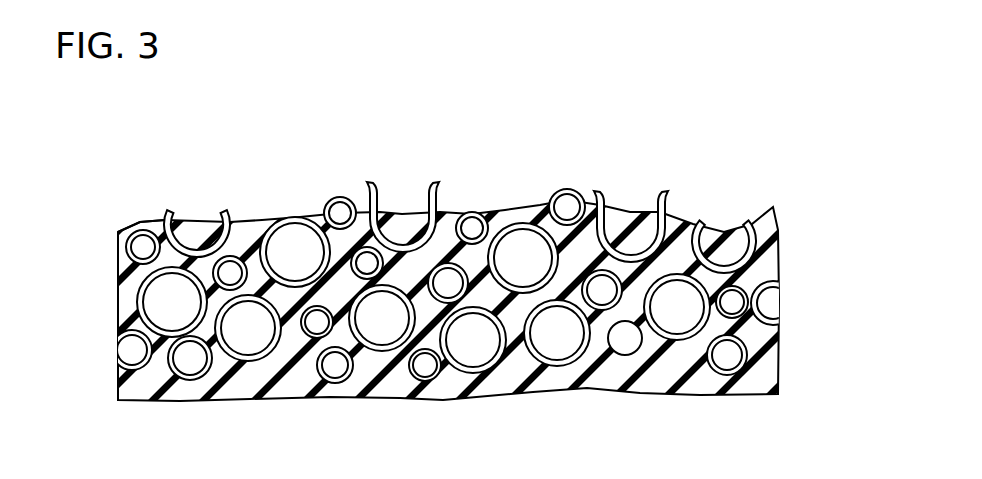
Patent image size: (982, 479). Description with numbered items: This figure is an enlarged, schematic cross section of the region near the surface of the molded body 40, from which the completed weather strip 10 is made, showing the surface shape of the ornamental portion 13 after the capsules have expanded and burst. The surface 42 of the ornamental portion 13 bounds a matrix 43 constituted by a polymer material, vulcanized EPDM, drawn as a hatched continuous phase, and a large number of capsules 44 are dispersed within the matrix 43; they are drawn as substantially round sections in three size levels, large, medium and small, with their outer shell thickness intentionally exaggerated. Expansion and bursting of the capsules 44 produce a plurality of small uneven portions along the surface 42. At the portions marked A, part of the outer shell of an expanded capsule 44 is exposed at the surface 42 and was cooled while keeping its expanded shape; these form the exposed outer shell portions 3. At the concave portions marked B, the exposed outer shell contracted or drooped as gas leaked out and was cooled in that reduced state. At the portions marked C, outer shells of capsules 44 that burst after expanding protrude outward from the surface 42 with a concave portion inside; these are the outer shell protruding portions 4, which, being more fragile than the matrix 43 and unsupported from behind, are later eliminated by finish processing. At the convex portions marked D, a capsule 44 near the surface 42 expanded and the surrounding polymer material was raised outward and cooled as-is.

The molded body 40 is at (491, 266).
The weather strip 10 is at (491, 266).
The ornamental portion 13 is at (790, 259).
The surface 42 is at (130, 222).
The matrix 43 is at (778, 364).
The capsules 44 is at (266, 226).
The exposed outer shell portions 3 is at (379, 202).
The outer shell protruding portions 4 is at (526, 187).
The expanded exposed capsule portion A is at (477, 212).
The concave portions B is at (170, 212).
The protruding burst shell portions C is at (526, 187).
The convex portions D is at (556, 188).